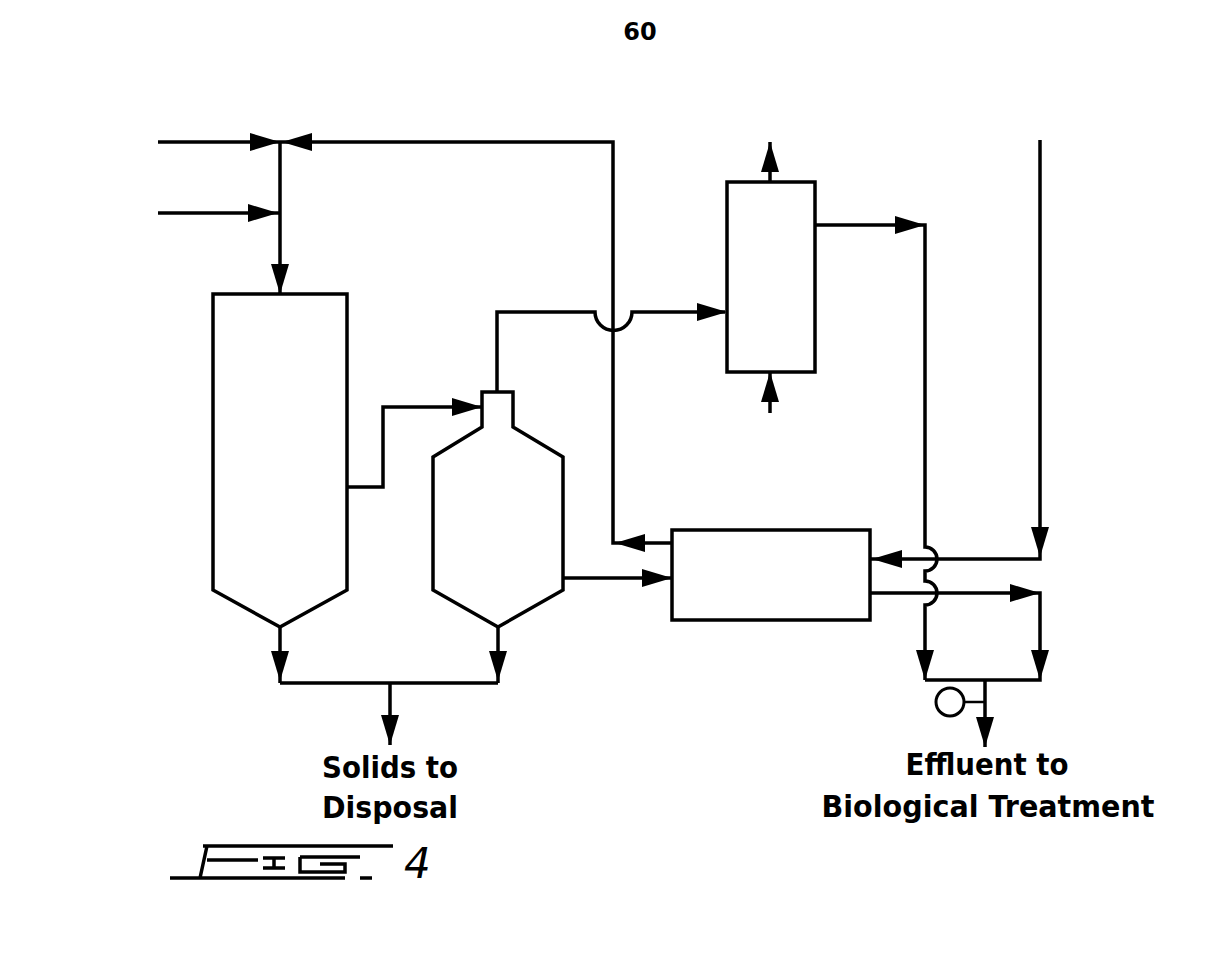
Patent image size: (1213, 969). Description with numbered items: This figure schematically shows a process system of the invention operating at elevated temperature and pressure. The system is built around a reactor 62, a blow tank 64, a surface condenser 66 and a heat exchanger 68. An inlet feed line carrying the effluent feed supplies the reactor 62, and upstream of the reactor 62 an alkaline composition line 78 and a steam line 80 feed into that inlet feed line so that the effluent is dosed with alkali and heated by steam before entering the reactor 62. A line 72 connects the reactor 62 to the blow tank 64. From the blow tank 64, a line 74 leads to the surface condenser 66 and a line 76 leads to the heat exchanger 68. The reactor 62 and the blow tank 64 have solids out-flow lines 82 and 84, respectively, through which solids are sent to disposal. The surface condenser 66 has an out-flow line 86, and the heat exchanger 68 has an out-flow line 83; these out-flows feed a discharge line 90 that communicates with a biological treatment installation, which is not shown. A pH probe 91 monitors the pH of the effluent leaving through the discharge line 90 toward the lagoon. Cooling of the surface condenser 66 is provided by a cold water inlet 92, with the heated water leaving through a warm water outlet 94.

The reactor 62 is at (210, 492).
The blow tank 64 is at (540, 433).
The surface condenser 66 is at (822, 292).
The heat exchanger 68 is at (772, 623).
The line 72 is at (410, 404).
The line 74 is at (545, 306).
The line 76 is at (604, 583).
The alkaline composition line 78 is at (152, 144).
The steam line 80 is at (205, 217).
The solids out-flow line 82 is at (263, 637).
The out-flow line 83 is at (893, 598).
The solids out-flow line 84 is at (508, 638).
The out-flow line 86 is at (858, 220).
The discharge line 90 is at (992, 702).
The pH probe 91 is at (932, 702).
The cold water inlet 92 is at (781, 398).
The warm water outlet 94 is at (780, 160).